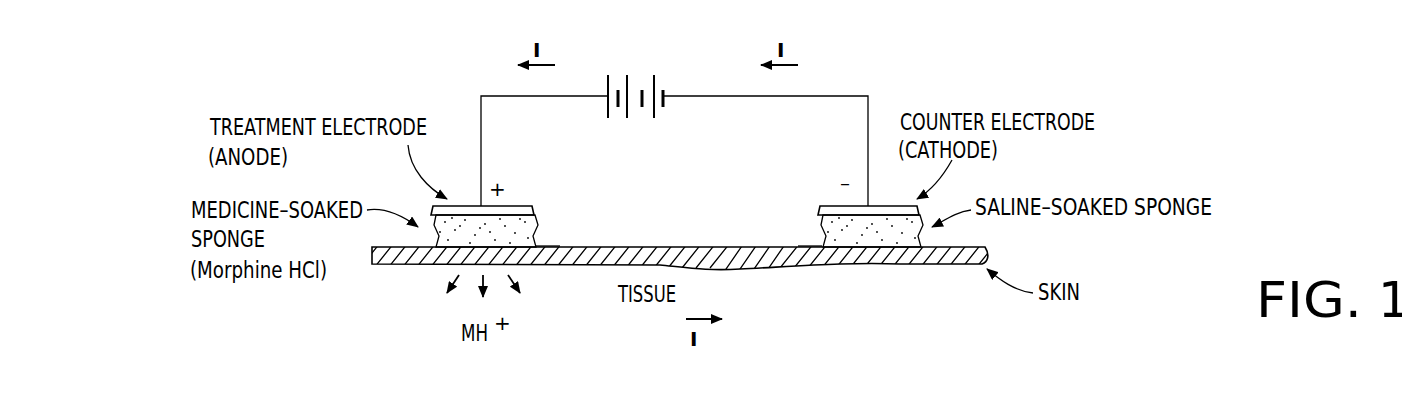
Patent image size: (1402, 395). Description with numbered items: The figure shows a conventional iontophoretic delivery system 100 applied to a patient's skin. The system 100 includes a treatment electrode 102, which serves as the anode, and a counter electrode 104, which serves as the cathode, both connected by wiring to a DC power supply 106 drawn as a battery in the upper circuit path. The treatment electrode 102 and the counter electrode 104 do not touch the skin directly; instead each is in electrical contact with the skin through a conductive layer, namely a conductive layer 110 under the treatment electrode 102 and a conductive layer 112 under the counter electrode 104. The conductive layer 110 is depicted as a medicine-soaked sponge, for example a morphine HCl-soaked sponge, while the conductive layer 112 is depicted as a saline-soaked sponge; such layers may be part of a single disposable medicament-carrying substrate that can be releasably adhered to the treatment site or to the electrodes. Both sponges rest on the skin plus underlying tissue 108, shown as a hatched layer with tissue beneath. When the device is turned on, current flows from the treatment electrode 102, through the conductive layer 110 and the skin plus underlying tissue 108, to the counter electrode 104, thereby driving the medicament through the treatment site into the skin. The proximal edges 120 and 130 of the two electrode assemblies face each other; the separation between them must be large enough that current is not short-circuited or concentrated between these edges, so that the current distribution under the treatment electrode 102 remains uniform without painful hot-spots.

The iontophoretic delivery system 100 is at (450, 103).
The treatment electrode 102 is at (518, 206).
The counter electrode 104 is at (830, 206).
The DC power supply 106 is at (638, 120).
The skin plus underlying tissue 108 is at (908, 264).
The conductive layer 110 is at (512, 225).
The conductive layer 112 is at (820, 233).
The edge 120 is at (538, 246).
The edge 130 is at (820, 245).